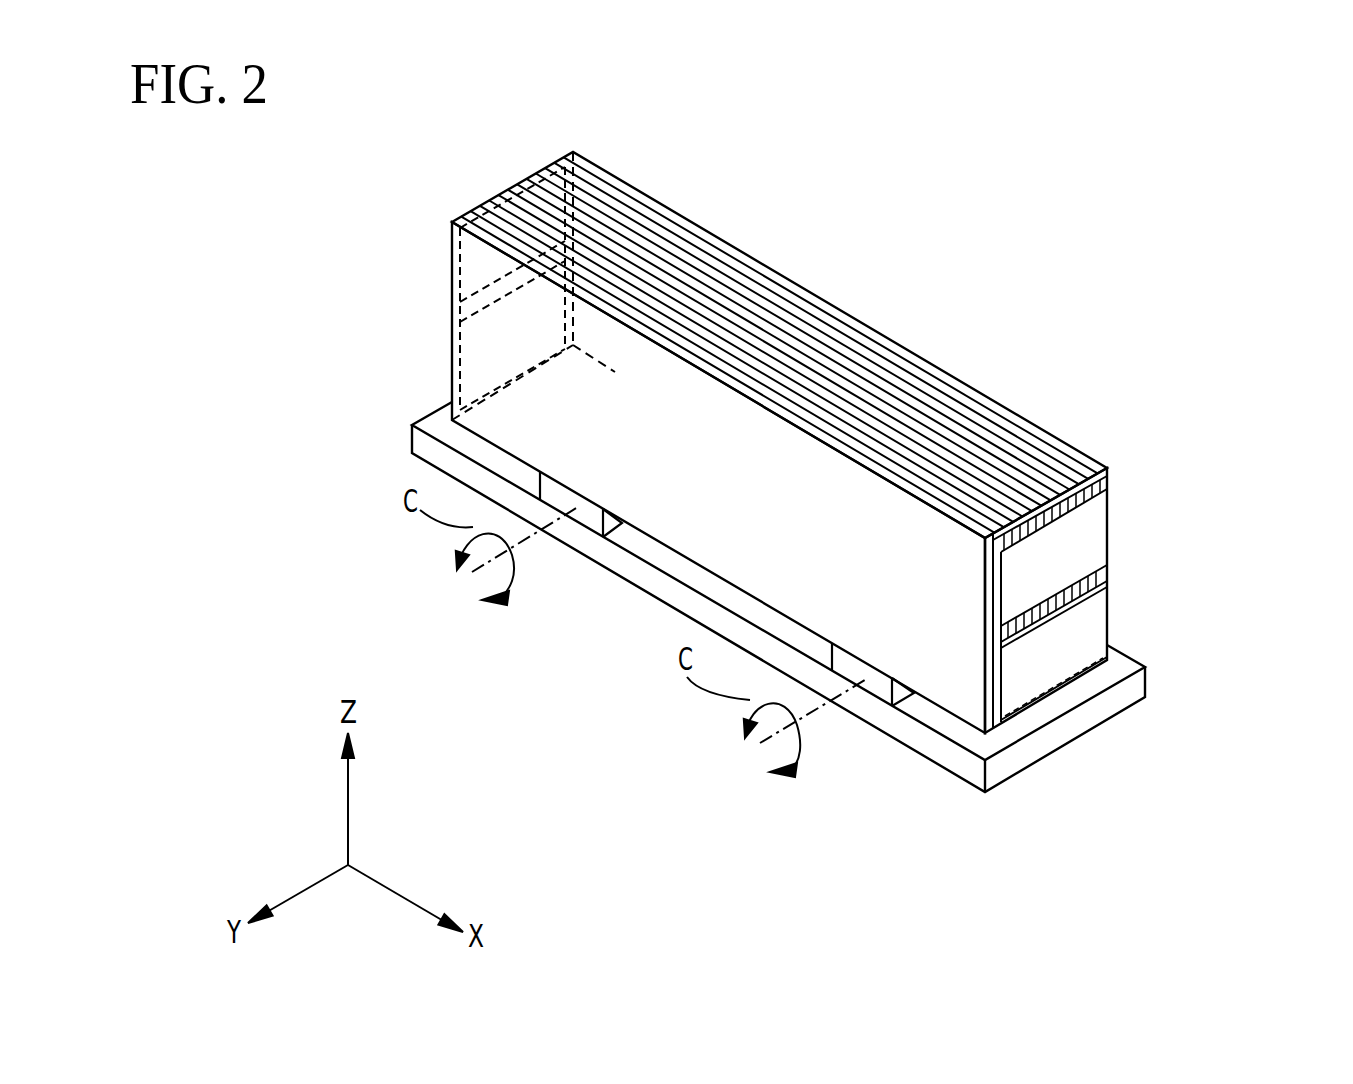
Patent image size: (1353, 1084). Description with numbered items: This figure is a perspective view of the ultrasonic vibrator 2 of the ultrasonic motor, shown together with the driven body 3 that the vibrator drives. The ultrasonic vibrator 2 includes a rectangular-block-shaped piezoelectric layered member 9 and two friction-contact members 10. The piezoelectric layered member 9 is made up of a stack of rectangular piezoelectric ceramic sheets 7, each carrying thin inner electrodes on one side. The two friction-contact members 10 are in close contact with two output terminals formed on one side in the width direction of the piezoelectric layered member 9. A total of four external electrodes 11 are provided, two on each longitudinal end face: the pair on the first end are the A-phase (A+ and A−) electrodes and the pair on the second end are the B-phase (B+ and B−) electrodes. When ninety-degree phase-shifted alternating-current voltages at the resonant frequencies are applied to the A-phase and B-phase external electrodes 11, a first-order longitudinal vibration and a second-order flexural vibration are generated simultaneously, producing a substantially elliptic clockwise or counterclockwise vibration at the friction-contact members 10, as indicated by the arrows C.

The ultrasonic vibrator 2 is at (787, 455).
The driven body 3 is at (1037, 743).
The piezoelectric ceramic sheet 7 is at (779, 406).
The piezoelectric layered member 9 is at (617, 172).
The friction-contact member 10 is at (585, 517).
The external electrode 11 is at (1093, 537).